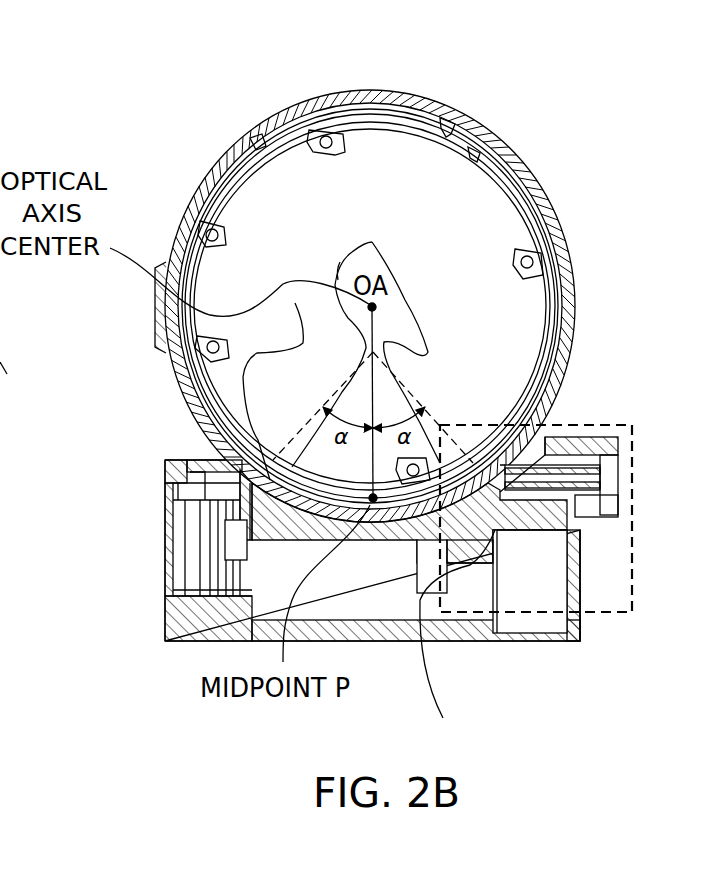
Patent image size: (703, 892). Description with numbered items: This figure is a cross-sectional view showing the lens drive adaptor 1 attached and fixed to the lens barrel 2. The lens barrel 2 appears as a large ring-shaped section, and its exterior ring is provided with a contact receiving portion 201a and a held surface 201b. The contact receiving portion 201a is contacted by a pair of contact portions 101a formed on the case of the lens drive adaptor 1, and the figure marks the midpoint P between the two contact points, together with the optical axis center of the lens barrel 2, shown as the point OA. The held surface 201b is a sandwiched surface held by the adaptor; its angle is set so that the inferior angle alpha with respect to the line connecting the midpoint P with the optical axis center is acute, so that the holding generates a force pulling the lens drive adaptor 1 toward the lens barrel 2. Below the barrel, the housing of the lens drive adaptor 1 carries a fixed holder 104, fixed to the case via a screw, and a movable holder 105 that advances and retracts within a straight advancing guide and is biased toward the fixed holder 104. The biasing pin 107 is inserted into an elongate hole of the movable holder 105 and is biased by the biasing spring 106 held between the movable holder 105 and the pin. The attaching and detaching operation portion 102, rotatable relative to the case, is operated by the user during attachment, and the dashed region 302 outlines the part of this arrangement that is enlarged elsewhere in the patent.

The lens drive adaptor 1 is at (168, 461).
The lens barrel 2 is at (446, 126).
The contact receiving portion 201a is at (295, 303).
The held surface 201b is at (338, 280).
The contact portions 101a is at (165, 595).
The attaching and detaching operation portion 102 is at (613, 435).
The fixed holder 104 is at (168, 504).
The movable holder 105 is at (497, 560).
The biasing spring 106 is at (533, 515).
The biasing pin 107 is at (605, 520).
The region 302 is at (623, 425).